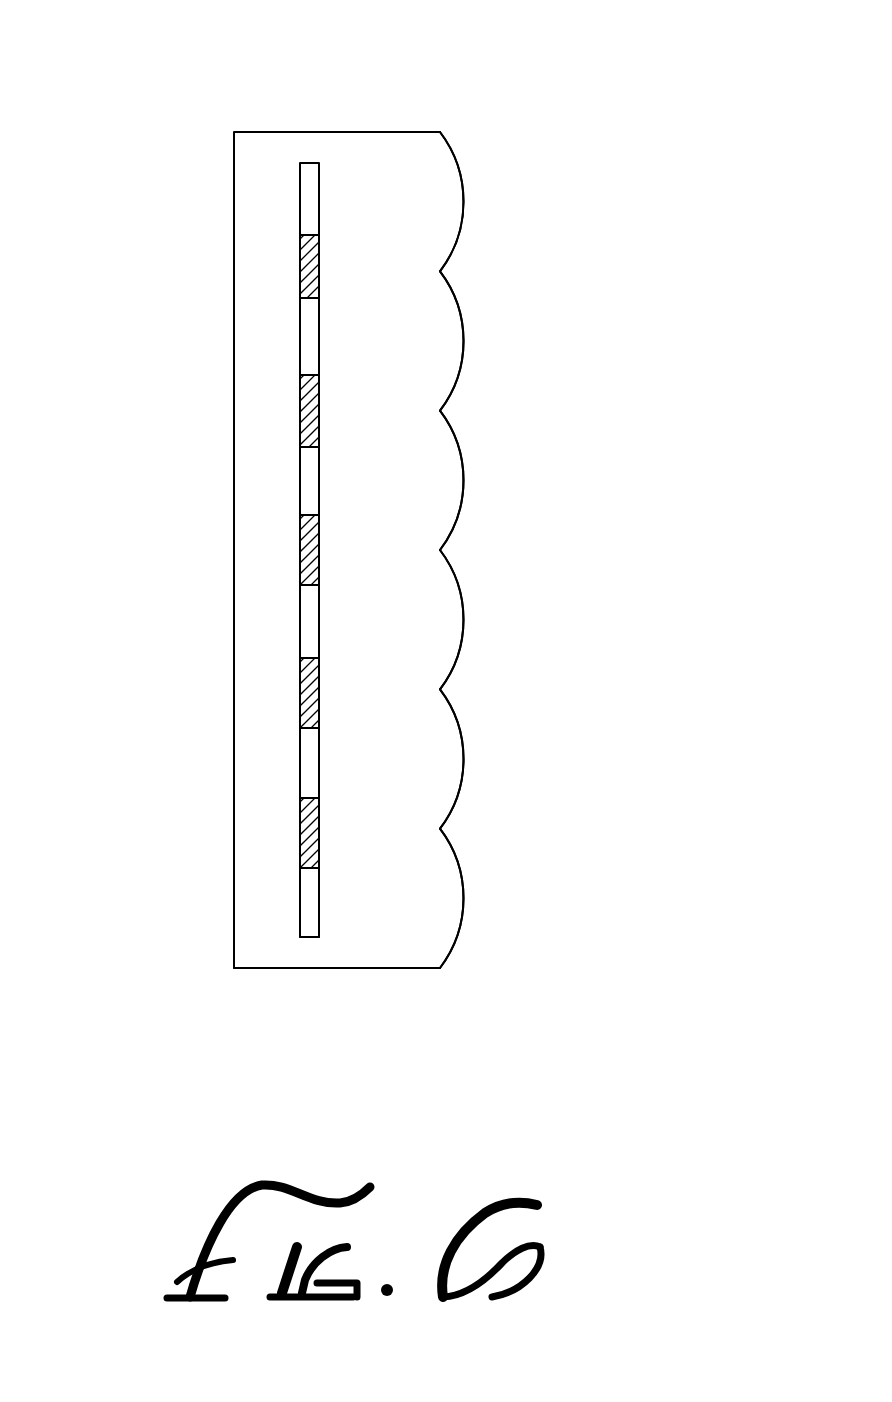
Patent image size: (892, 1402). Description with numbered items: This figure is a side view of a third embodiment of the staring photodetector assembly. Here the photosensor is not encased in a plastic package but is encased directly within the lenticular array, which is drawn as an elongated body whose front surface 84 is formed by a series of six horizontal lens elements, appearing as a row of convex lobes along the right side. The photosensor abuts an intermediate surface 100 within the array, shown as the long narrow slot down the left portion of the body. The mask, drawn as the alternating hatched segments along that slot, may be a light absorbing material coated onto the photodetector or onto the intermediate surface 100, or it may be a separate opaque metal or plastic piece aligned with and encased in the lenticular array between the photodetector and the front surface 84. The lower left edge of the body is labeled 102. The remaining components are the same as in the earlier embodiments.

The front surface 84 is at (450, 142).
The intermediate surface 100 is at (320, 910).
The lower left edge 102 is at (234, 913).